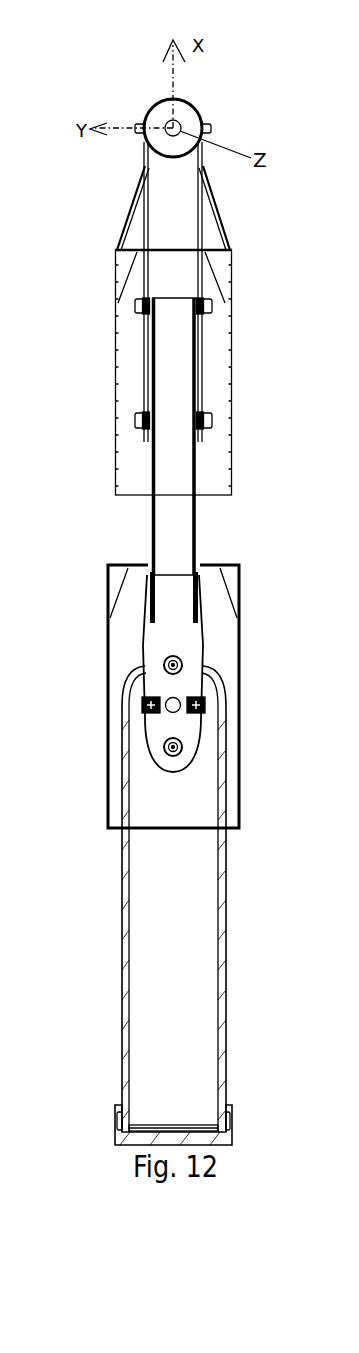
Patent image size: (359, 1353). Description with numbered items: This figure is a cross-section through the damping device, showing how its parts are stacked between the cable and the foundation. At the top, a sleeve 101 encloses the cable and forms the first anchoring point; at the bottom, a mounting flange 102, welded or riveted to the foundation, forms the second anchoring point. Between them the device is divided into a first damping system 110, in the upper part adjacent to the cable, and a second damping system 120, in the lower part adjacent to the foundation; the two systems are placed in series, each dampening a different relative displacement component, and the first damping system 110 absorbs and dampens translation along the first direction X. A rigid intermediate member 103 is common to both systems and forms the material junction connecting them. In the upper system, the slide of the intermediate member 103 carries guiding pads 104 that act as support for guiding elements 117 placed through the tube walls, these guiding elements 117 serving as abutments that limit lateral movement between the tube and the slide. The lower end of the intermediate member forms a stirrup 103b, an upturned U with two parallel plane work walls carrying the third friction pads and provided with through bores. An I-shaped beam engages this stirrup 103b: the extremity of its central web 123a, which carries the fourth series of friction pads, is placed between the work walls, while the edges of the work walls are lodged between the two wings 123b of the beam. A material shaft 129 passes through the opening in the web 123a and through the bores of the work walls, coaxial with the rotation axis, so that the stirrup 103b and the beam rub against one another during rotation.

The sleeve 101 is at (194, 111).
The mounting flange 102 is at (118, 1137).
The intermediate member 103 is at (204, 544).
The second extremity of the intermediate member 103b is at (167, 637).
The guiding pads 104 is at (146, 377).
The first damping system 110 is at (258, 251).
The guiding elements 117 is at (146, 298).
The second damping system 120 is at (257, 550).
The central web 123a is at (193, 912).
The wings 123b is at (121, 1060).
The material shaft 129 is at (165, 712).